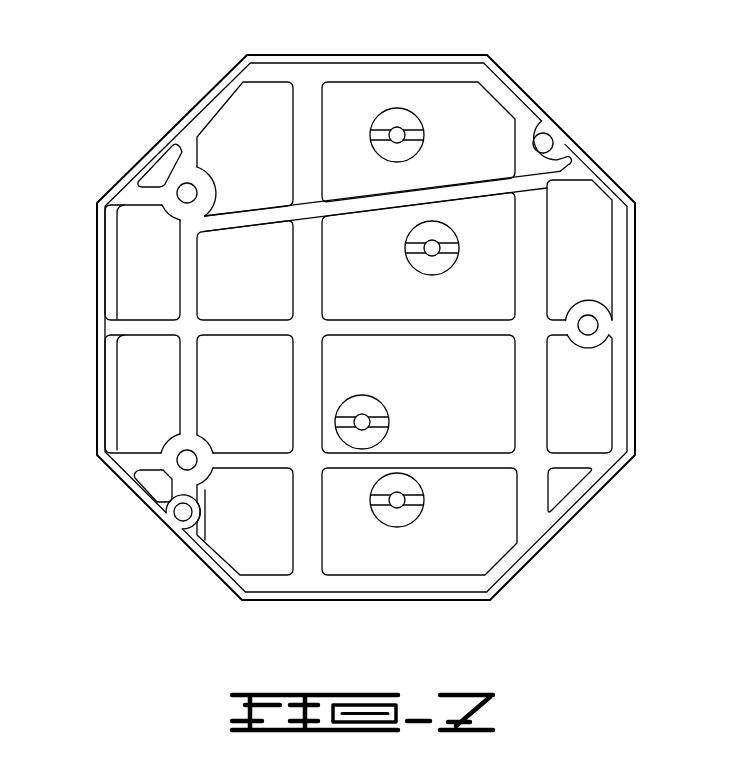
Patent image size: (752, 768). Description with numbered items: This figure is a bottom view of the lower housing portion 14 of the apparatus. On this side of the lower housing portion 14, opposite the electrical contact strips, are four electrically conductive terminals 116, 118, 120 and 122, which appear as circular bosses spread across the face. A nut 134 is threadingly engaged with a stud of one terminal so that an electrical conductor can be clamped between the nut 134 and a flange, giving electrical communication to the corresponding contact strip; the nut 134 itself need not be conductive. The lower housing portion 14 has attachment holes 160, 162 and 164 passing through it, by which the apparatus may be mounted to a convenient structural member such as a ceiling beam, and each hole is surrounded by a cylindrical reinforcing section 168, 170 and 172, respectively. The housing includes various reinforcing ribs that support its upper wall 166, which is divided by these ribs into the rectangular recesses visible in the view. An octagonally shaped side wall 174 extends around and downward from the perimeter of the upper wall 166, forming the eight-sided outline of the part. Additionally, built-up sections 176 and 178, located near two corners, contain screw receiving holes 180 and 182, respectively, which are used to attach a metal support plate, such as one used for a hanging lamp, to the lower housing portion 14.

The lower housing portion 14 is at (465, 96).
The electrically conductive terminal 116 is at (400, 500).
The electrically conductive terminal 118 is at (364, 421).
The electrically conductive terminal 120 is at (433, 247).
The electrically conductive terminal 122 is at (392, 132).
The nut 134 is at (395, 520).
The attachment hole 160 is at (593, 323).
The attachment hole 162 is at (183, 462).
The attachment hole 164 is at (198, 173).
The upper wall 166 is at (412, 302).
The cylindrical reinforcing section 168 is at (587, 313).
The cylindrical reinforcing section 170 is at (198, 477).
The cylindrical reinforcing section 172 is at (189, 190).
The octagonally shaped side wall 174 is at (270, 52).
The built-up section 176 is at (184, 528).
The built-up section 178 is at (545, 122).
The screw receiving hole 180 is at (181, 517).
The screw receiving hole 182 is at (546, 151).